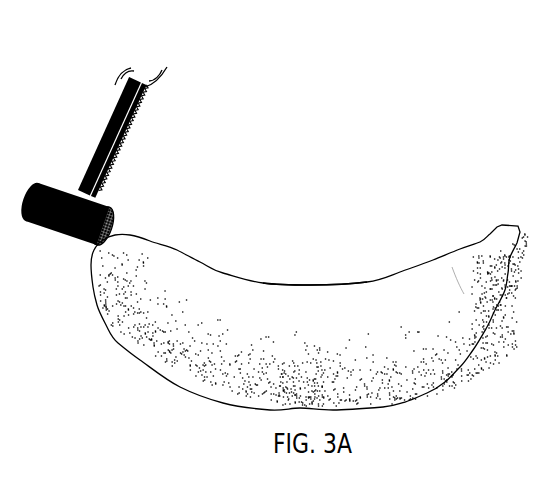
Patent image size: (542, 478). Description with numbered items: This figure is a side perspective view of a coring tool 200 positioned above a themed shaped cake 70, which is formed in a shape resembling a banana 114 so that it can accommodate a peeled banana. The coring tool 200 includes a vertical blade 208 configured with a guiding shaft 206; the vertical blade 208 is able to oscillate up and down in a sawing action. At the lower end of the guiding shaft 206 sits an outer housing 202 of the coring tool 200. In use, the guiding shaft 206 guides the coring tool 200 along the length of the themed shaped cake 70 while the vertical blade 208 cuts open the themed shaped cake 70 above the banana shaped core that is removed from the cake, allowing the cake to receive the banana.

The themed shaped cake 70 is at (390, 244).
The banana 114 is at (297, 283).
The coring tool 200 is at (147, 62).
The outer housing 202 is at (50, 235).
The guiding shaft 206 is at (70, 182).
The vertical blade 208 is at (110, 162).